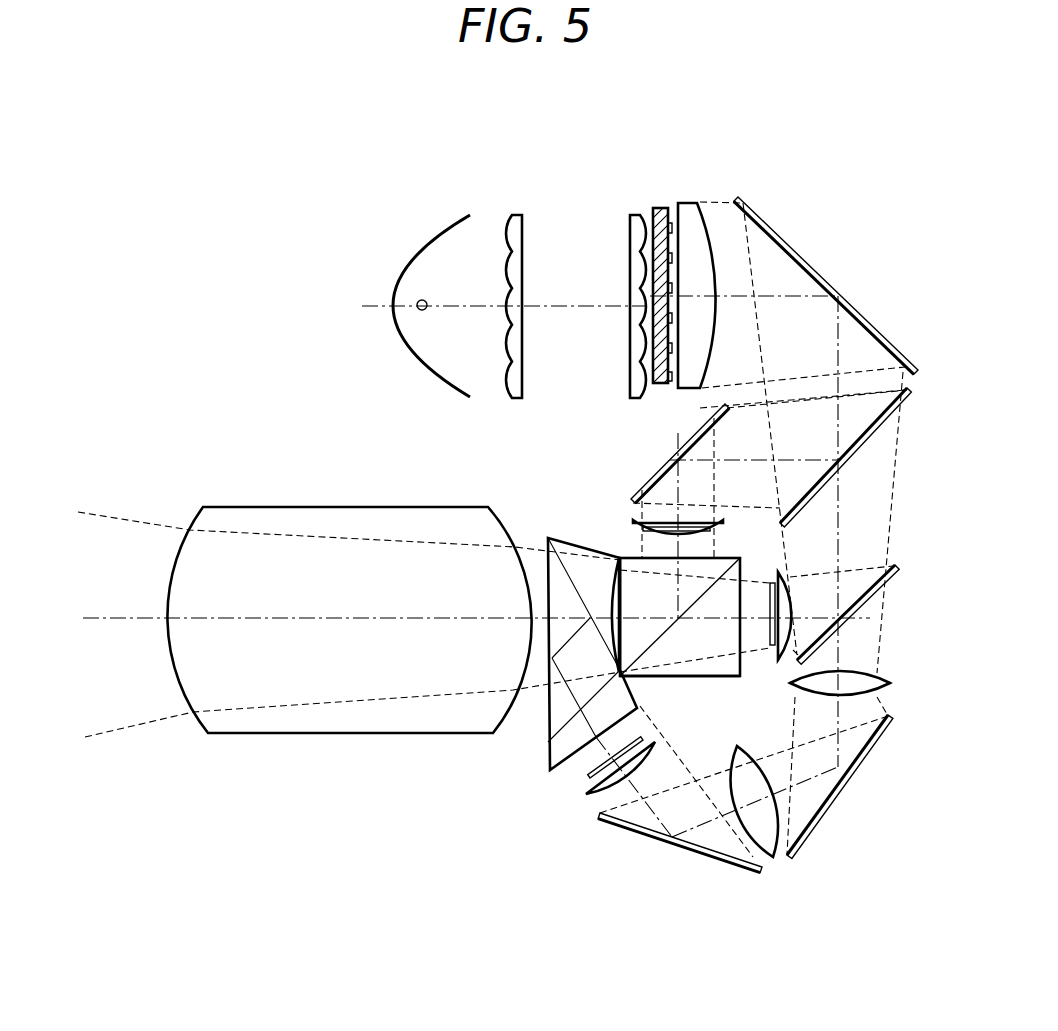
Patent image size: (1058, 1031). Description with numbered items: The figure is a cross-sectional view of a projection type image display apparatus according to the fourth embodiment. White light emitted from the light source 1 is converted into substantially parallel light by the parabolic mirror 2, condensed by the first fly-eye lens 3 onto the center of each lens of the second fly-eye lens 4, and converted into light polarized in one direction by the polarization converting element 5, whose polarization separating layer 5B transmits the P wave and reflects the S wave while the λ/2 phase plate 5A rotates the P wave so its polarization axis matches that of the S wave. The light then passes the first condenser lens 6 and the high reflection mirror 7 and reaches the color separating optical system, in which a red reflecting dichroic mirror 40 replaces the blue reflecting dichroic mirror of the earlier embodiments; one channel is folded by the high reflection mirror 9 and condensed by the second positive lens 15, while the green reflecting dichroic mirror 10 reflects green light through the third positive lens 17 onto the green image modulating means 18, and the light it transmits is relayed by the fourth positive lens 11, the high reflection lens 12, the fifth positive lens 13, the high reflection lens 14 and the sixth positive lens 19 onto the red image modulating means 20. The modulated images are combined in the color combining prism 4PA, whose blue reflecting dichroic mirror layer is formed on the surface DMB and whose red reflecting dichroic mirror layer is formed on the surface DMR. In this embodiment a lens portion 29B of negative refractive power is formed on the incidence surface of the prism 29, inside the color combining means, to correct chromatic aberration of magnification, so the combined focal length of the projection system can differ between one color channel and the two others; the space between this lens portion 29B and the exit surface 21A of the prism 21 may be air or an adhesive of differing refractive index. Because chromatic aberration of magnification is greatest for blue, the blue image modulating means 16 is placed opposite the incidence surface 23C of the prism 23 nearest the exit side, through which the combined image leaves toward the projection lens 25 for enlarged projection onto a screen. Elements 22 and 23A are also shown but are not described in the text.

The light source 1 is at (417, 302).
The parabolic mirror 2 is at (438, 232).
The first fly-eye lens 3 is at (515, 215).
The second fly-eye lens 4 is at (630, 225).
The polarization converting element 5 is at (660, 207).
The λ/2 phase plate 5A is at (670, 207).
The polarization separating layer 5B is at (657, 208).
The first condenser lens 6 is at (697, 202).
The high reflection mirror 7 is at (772, 222).
The high reflection mirror 9 is at (692, 436).
The green reflecting dichroic mirror 10 is at (896, 570).
The fourth positive lens 11 is at (891, 684).
The high reflection lens 12 is at (877, 735).
The fifth positive lens 13 is at (774, 861).
The high reflection lens 14 is at (643, 832).
The second positive lens 15 is at (637, 514).
The blue image modulating means 16 is at (588, 771).
The third positive lens 17 is at (786, 572).
The green image modulating means 18 is at (772, 650).
The sixth positive lens 19 is at (586, 797).
The red image modulating means 20 is at (650, 529).
The prism 21 is at (733, 556).
The exit surface 21A is at (680, 617).
The polarizing plate 22 is at (650, 678).
The prism 23 is at (548, 750).
The first prism 23A is at (548, 722).
The incidence surface 23C is at (552, 772).
The projection lens 25 is at (345, 505).
The prism 29 is at (556, 538).
The lens portion 29B is at (612, 556).
The red reflecting dichroic mirror 40 is at (908, 392).
The red reflecting dichroic mirror layer surface DMR is at (746, 568).
The blue reflecting dichroic mirror layer surface DMB is at (598, 650).
The color combining prism 4PA is at (548, 536).